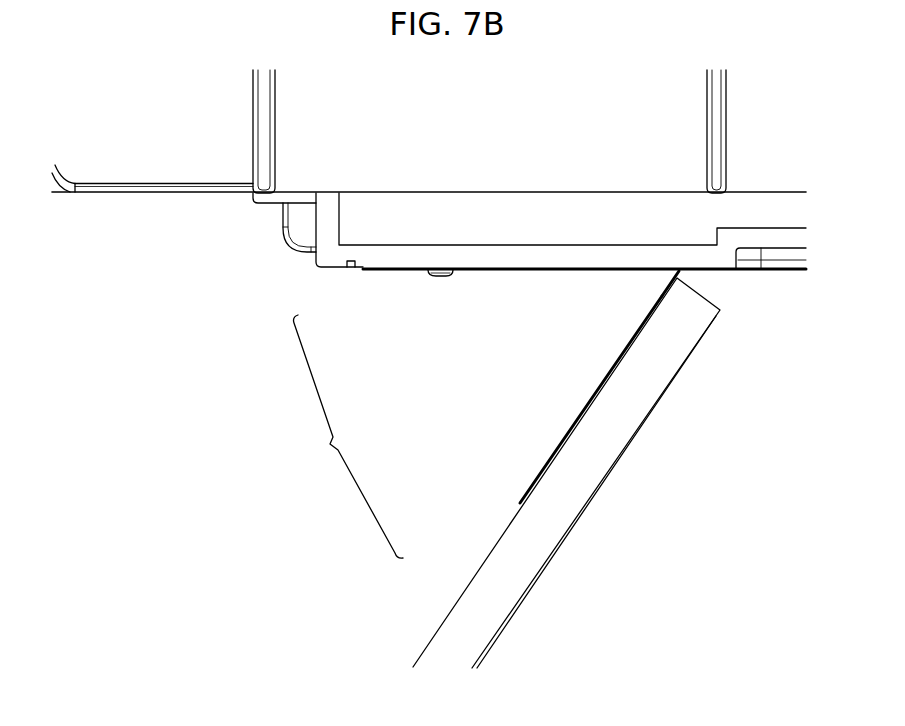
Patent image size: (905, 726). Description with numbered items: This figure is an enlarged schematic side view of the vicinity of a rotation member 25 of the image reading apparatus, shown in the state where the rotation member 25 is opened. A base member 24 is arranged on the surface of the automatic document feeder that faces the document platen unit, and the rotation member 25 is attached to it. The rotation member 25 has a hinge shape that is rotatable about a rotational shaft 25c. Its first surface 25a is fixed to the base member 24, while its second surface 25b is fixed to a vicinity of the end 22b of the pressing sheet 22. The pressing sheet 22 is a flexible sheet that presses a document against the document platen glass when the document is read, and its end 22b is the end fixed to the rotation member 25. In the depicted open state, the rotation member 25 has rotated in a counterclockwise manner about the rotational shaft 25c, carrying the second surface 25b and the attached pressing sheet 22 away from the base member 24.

The pressing sheet 22 is at (596, 473).
The end 22b is at (690, 325).
The base member 24 is at (389, 255).
The rotation member 25 is at (349, 436).
The first surface 25a is at (398, 272).
The second surface 25b is at (545, 467).
The rotational shaft 25c is at (678, 273).